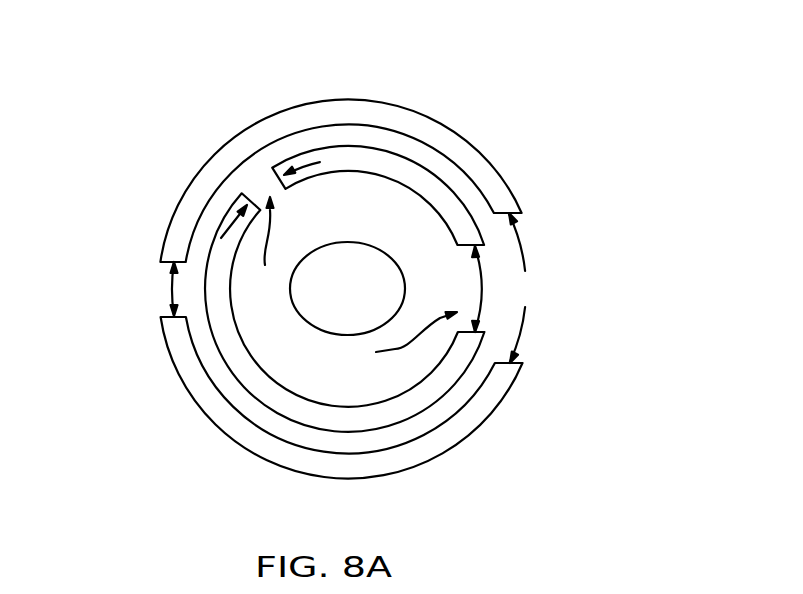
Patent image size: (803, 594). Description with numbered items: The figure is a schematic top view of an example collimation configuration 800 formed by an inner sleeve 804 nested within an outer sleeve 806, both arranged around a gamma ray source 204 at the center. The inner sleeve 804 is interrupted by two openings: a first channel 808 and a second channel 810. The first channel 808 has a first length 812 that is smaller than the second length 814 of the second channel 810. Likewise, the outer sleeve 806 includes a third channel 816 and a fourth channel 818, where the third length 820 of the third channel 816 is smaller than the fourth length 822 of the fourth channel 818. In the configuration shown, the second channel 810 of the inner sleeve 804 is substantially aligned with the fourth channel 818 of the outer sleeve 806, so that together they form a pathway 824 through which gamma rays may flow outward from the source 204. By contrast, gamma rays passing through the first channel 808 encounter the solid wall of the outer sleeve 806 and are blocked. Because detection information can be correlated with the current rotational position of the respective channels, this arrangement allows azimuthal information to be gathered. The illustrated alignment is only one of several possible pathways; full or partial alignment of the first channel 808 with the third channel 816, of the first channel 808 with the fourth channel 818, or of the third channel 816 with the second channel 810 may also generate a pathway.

The collimation configuration 800 is at (522, 82).
The outer sleeve 806 is at (447, 135).
The inner sleeve 804 is at (383, 177).
The first length 812 is at (233, 226).
The source 204 is at (343, 318).
The first channel 808 is at (265, 249).
The second channel 810 is at (396, 340).
The second length 814 is at (478, 288).
The fourth length 822 is at (527, 288).
The third length 820 is at (170, 287).
The fourth channel 818 is at (552, 243).
The pathway 824 is at (572, 320).
The third channel 816 is at (140, 309).